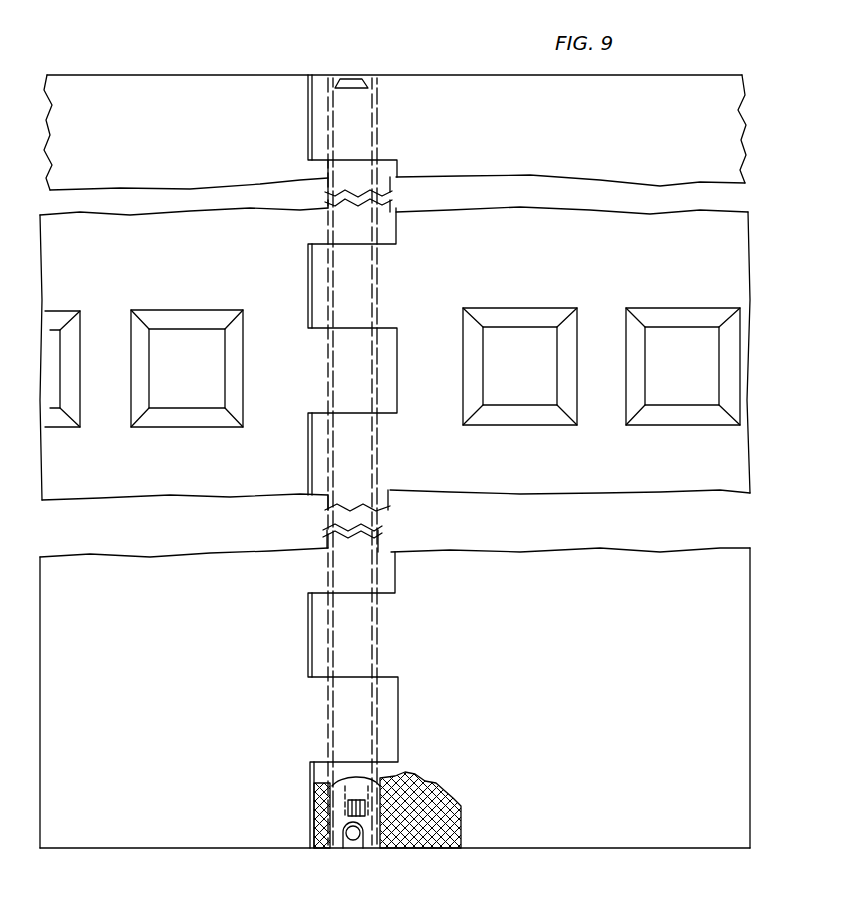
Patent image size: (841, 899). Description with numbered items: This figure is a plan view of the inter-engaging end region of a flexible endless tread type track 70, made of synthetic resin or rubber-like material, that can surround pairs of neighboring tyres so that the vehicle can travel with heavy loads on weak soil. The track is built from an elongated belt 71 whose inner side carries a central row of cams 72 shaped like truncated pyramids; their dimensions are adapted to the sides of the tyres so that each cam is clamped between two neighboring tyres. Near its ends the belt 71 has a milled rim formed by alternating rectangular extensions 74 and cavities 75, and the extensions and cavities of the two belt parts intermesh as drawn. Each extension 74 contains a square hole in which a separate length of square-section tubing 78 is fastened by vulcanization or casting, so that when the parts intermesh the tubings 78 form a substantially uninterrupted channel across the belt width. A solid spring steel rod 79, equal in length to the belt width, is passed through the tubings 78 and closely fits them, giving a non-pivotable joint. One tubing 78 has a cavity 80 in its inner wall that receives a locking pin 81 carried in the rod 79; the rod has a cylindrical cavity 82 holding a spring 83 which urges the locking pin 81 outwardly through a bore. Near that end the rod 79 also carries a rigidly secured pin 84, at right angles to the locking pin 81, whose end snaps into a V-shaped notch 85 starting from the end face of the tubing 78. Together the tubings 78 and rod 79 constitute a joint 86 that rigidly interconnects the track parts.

The endless tread type track 70 is at (87, 501).
The belt 71 is at (240, 75).
The cams 72 is at (655, 336).
The extensions 74 is at (396, 237).
The cavities 75 is at (398, 168).
The tubing 78 is at (378, 290).
The spring steel rod 79 is at (368, 530).
The cavity 80 is at (405, 782).
The locking pin 81 is at (372, 777).
The cylindrical cavity 82 is at (335, 772).
The spring 83 is at (325, 800).
The pin 84 is at (346, 846).
The V-shaped notch 85 is at (360, 842).
The joint 86 is at (353, 73).